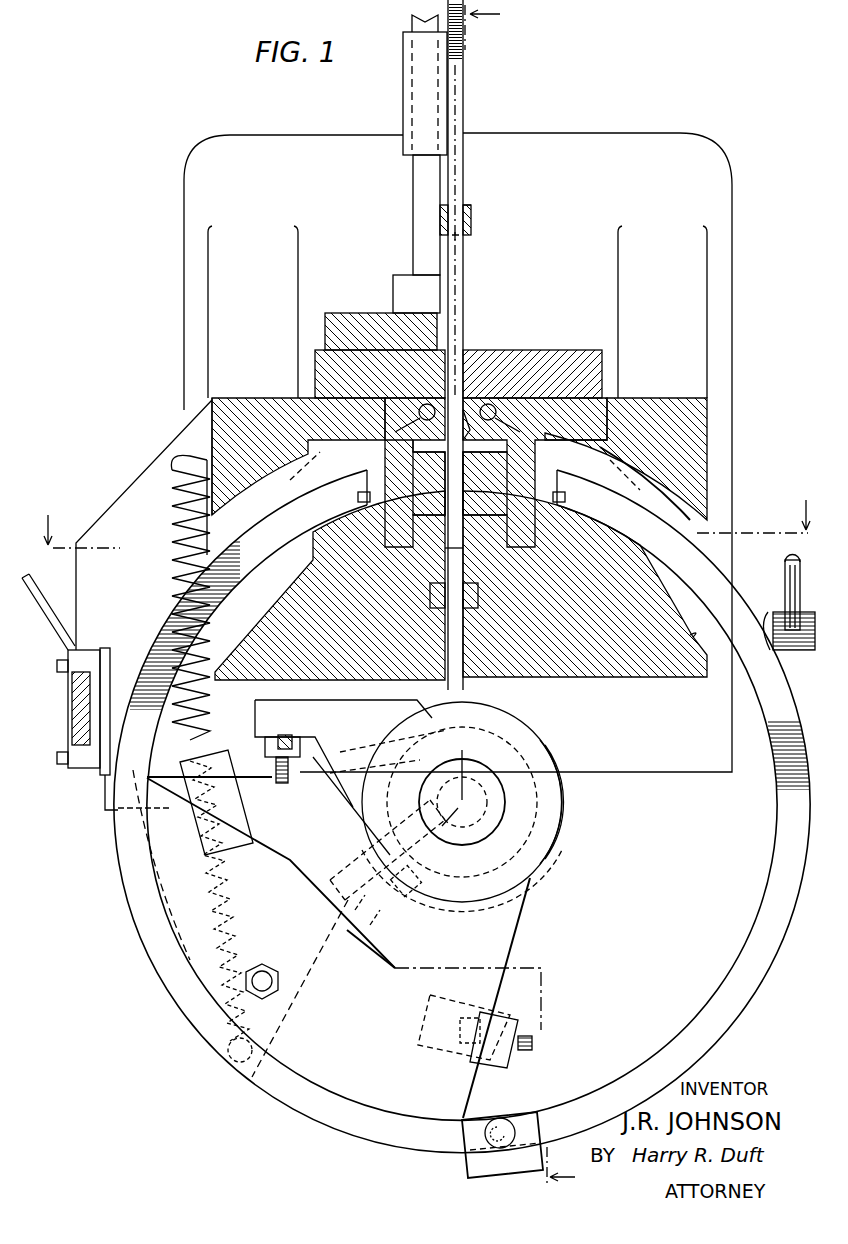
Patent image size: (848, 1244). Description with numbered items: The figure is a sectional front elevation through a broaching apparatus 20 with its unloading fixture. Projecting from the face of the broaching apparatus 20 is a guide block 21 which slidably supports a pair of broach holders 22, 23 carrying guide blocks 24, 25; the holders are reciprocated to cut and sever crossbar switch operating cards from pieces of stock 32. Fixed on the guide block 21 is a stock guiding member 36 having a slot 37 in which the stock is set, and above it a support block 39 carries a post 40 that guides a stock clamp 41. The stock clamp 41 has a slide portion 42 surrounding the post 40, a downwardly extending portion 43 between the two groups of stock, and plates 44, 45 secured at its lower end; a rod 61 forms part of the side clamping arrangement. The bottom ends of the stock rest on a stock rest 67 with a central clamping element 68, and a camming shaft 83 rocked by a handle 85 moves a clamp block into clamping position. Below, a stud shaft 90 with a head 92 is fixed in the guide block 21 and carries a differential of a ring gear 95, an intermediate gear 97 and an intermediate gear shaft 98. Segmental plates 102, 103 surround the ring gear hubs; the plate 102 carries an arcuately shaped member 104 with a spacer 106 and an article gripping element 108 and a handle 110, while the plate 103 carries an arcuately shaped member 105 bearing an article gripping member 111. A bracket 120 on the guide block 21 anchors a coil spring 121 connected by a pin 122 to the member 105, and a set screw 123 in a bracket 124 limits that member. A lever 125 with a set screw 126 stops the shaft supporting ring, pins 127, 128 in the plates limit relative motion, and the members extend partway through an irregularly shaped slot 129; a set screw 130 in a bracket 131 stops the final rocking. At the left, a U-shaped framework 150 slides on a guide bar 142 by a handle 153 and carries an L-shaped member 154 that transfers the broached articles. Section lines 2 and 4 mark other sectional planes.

The section line 2- 2 is at (529, 598).
The section line 4- 4 is at (425, 512).
The broaching apparatus 20 is at (720, 146).
The guide block 21 is at (690, 430).
The broach holder 22 is at (520, 418).
The broach holder 23 is at (390, 420).
The guide block 24 is at (490, 463).
The guide block 25 is at (410, 466).
The piece of stock 32 is at (462, 105).
The stock guiding member 36 is at (592, 352).
The slot 37 is at (466, 352).
The support block 39 is at (330, 318).
The post 40 is at (420, 192).
The stock clamp 41 is at (480, 198).
The slide portion 42 is at (403, 85).
The downwardly extending portion 43 is at (458, 240).
The plate 44 is at (478, 220).
The plate 45 is at (440, 222).
The rod 61 is at (489, 404).
The stock rest 67 is at (470, 682).
The central clamping element 68 is at (562, 470).
The camming shaft 83 is at (778, 618).
The handle 85 is at (786, 575).
The stud shaft 90 is at (532, 858).
The head 92 is at (500, 808).
The ring gear 95 is at (565, 797).
The intermediate gear 97 is at (412, 895).
The intermediate gear shaft 98 is at (380, 890).
The segmental plate 102 is at (505, 915).
The segmental plate 103 is at (165, 872).
The arcuately shaped member 104 is at (790, 860).
The arcuately shaped member 105 is at (130, 790).
The spacer 106 is at (778, 912).
The article gripping element 108 is at (565, 506).
The handle 110 is at (500, 1120).
The article gripping member 111 is at (365, 506).
The bracket 120 is at (205, 455).
The coil spring 121 is at (172, 510).
The pin 122 is at (232, 1062).
The set screw 123 is at (200, 750).
The bracket 124 is at (210, 815).
The lever 125 is at (348, 812).
The set screw 126 is at (280, 785).
The pin 127 is at (270, 975).
The pin 128 is at (258, 962).
The irregularly shaped slot 129 is at (690, 655).
The set screw 130 is at (532, 1042).
The bracket 131 is at (505, 1055).
The guide bar 142 is at (72, 725).
The U-shaped framework 150 is at (88, 655).
The handle 153 is at (45, 605).
The L-shaped member 154 is at (105, 812).